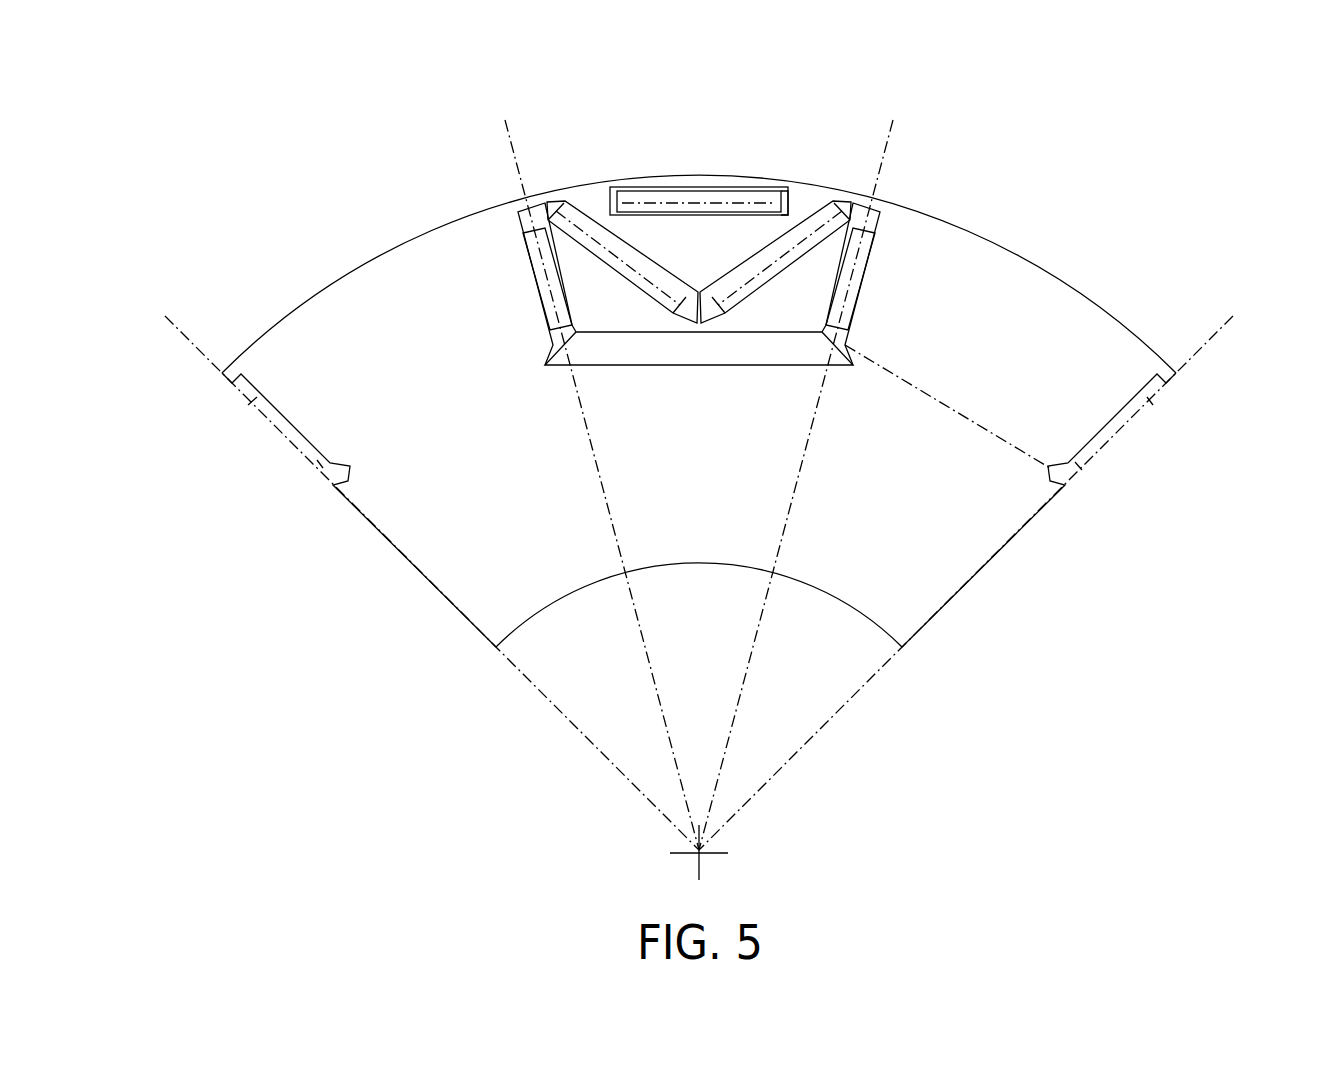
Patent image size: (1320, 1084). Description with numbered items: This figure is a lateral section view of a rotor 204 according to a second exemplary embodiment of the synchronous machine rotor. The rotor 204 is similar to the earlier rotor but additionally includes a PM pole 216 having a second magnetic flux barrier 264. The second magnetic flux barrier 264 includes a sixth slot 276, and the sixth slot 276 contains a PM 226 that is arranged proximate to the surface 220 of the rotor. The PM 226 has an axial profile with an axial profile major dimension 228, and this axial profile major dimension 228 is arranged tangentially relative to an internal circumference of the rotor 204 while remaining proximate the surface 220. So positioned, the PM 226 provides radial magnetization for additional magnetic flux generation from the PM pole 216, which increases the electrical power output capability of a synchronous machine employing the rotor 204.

The rotor 204 is at (370, 655).
The PM pole 216 is at (748, 139).
The surface 220 is at (1086, 299).
The PM 226 is at (720, 192).
The axial profile major dimension 228 is at (637, 198).
The second magnetic flux barrier 264 is at (922, 245).
The sixth slot 276 is at (788, 198).